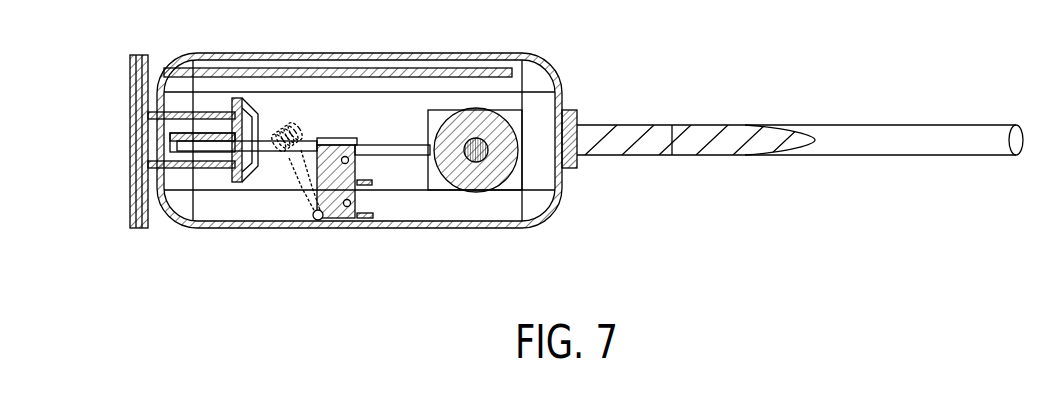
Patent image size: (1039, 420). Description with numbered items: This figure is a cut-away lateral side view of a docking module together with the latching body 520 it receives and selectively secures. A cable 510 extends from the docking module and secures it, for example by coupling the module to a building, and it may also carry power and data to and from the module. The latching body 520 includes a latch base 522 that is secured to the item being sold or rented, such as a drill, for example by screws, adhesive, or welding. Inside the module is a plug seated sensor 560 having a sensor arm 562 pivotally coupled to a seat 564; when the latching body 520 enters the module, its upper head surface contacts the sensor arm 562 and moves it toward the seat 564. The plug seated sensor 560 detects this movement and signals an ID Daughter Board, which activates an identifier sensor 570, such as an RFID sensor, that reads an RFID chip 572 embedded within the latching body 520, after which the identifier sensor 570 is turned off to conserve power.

The cable 510 is at (717, 157).
The latching body 520 is at (131, 58).
The latch base 522 is at (477, 108).
The plug seated sensor 560 is at (366, 185).
The sensor arm 562 is at (303, 188).
The seat 564 is at (332, 137).
The identifier sensor 570 is at (312, 70).
The RFID chip 572 is at (213, 132).